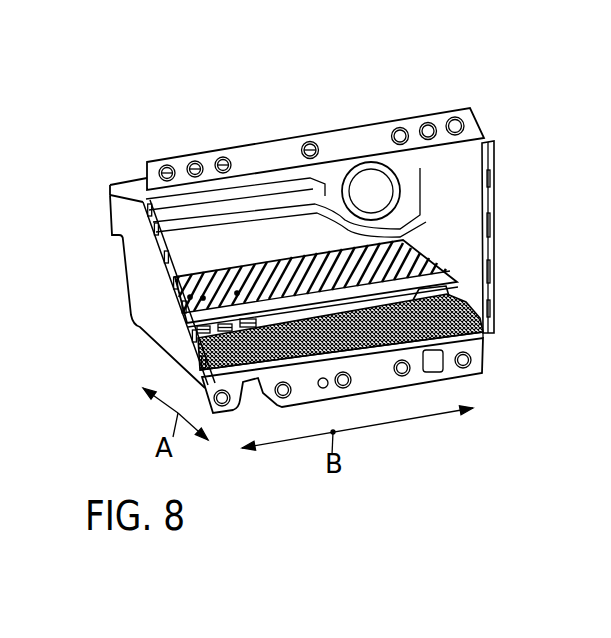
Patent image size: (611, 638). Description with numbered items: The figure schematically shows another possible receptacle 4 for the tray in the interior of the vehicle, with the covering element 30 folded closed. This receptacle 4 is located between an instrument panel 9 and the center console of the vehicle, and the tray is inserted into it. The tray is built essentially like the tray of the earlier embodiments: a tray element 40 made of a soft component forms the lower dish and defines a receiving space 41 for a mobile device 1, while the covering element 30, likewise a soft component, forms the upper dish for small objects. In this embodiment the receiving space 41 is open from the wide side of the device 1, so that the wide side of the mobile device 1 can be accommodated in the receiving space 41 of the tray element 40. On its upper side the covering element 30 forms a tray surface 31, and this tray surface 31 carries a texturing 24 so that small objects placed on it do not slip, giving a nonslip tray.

The instrument panel 9 is at (343, 123).
The receptacle 4 is at (450, 203).
The tray surface 31 is at (387, 265).
The covering element 30 is at (448, 260).
The mobile device 1 is at (380, 303).
The receiving space 41 is at (447, 297).
The tray element 40 is at (490, 323).
The texturing 24 is at (176, 305).